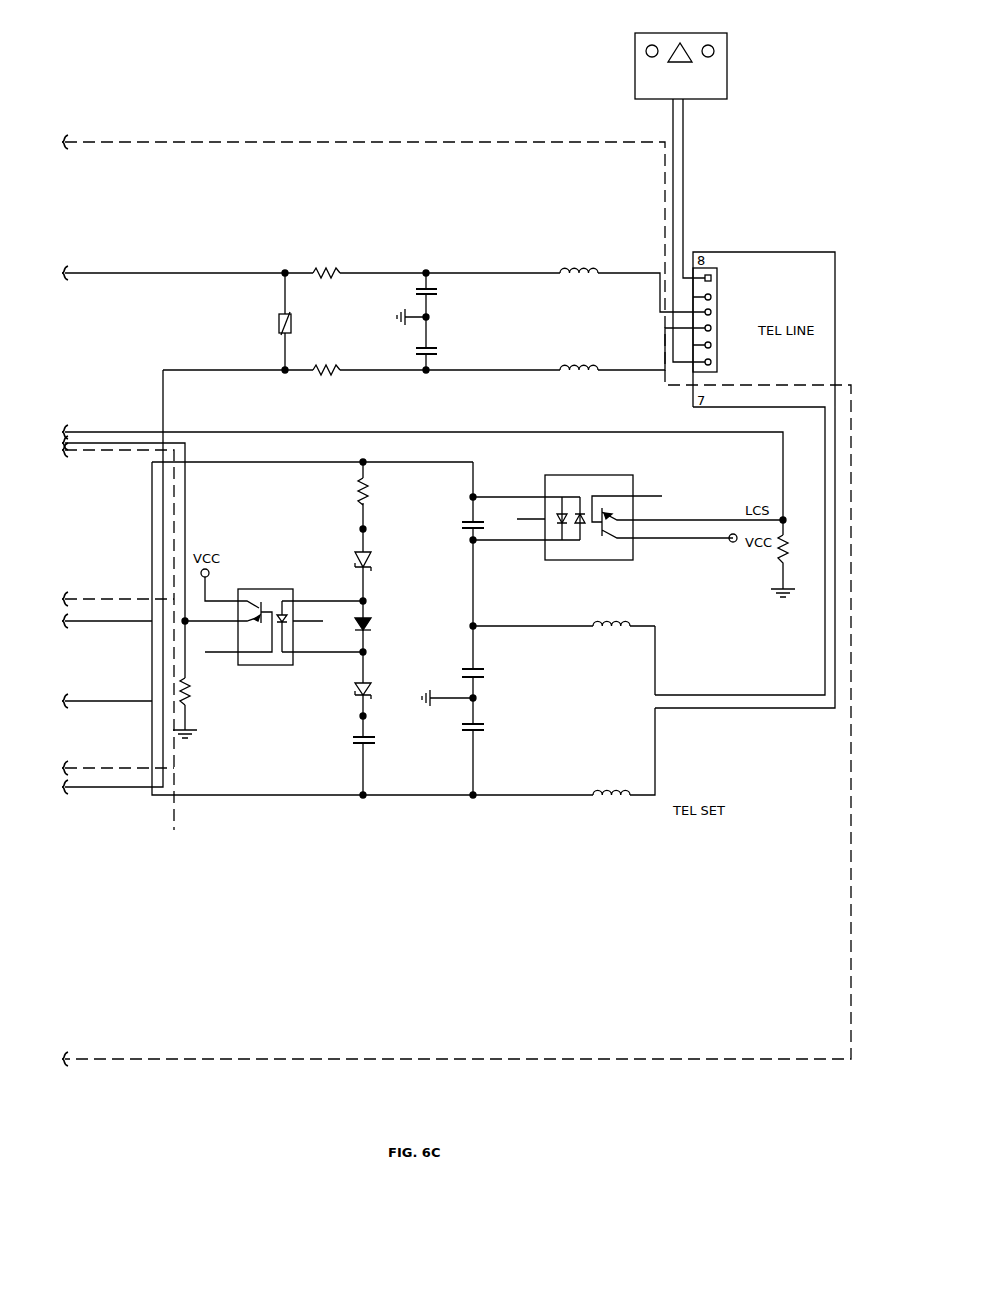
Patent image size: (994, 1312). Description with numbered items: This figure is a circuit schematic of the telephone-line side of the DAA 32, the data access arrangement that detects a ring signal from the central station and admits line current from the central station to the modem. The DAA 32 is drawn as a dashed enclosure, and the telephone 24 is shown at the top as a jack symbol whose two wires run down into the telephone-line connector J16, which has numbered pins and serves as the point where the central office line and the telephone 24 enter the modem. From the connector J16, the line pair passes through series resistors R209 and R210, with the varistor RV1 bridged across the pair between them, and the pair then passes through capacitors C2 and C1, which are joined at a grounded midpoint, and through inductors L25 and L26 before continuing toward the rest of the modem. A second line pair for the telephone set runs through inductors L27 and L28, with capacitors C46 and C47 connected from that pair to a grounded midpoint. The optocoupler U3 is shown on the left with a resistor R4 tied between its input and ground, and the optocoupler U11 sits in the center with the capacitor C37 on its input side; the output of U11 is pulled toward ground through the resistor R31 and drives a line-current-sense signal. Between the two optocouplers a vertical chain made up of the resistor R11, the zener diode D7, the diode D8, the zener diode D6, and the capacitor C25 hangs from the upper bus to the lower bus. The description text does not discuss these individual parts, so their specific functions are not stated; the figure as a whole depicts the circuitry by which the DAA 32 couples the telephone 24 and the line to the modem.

The telephone 24 is at (691, 92).
The DAA 32 is at (704, 951).
The telephone line connector J16 is at (712, 318).
The optocoupler 4N35 U3 is at (284, 631).
The optocoupler IL250 U11 is at (628, 529).
The resistor 20K R4 is at (202, 692).
The resistor 7.5K R11 is at (382, 495).
The resistor 20K R31 is at (798, 554).
The resistor 10 ohm R209 is at (324, 274).
The resistor 10 ohm R210 is at (324, 370).
The varistor V250LC4 RV1 is at (318, 323).
The capacitor 1000pF C1 is at (455, 373).
The capacitor 1000pF C2 is at (455, 308).
The capacitor 0.47uF C25 is at (391, 743).
The capacitor 0.1uF C37 is at (456, 525).
The capacitor 1000pF C46 is at (504, 672).
The capacitor 1000pF C47 is at (502, 752).
The inductor L25 is at (579, 281).
The inductor L26 is at (579, 379).
The inductor L27 is at (611, 634).
The inductor L28 is at (611, 804).
The zener diode BZX84C18 D6 is at (325, 691).
The zener diode BZX84C18 D7 is at (325, 553).
The diode BAS16 D8 is at (386, 624).